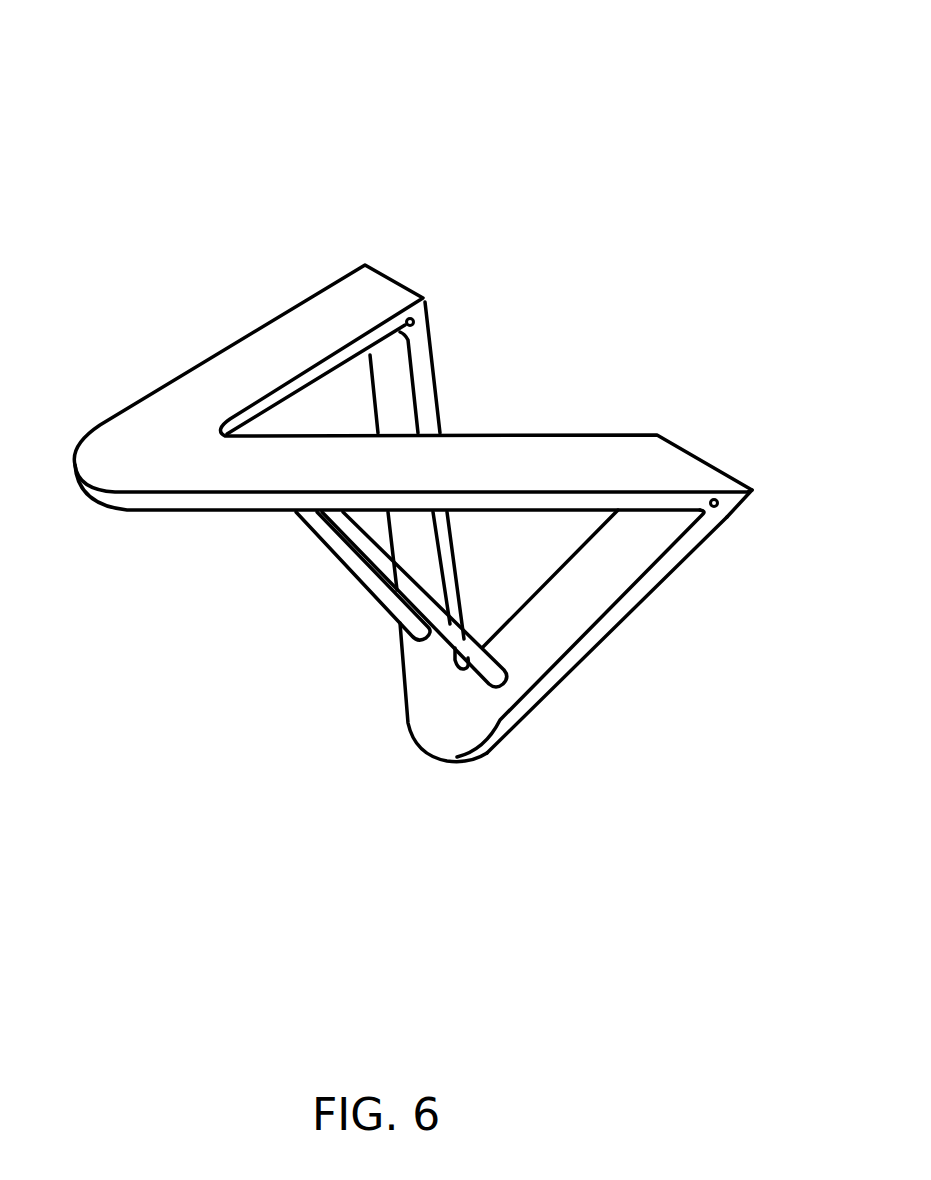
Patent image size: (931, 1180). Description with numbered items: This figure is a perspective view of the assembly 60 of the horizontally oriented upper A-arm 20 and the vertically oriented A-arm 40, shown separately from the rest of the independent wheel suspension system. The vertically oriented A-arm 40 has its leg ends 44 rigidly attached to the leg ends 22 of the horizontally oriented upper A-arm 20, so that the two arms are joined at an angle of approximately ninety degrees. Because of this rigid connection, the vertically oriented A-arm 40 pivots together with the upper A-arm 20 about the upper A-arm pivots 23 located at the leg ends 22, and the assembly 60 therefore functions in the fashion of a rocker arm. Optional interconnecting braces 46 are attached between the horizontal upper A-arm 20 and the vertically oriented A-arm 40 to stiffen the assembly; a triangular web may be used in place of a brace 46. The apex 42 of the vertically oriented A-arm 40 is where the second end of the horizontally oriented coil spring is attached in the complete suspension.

The horizontally oriented upper A-arm 20 is at (242, 337).
The leg ends of the upper A-arm 22 is at (290, 312).
The upper A-arm pivots 23 is at (414, 318).
The vertically oriented A-arm 40 is at (632, 600).
The apex of the vertically oriented A-arm 42 is at (418, 745).
The leg ends of the vertically oriented A-arm 44 is at (432, 348).
The interconnecting braces 46 is at (383, 605).
The assembly 60 is at (333, 262).